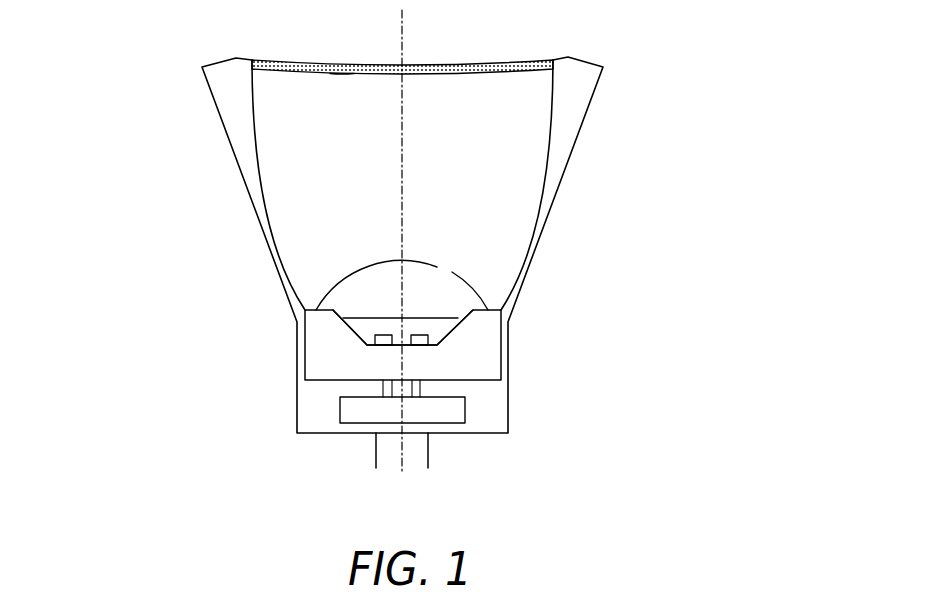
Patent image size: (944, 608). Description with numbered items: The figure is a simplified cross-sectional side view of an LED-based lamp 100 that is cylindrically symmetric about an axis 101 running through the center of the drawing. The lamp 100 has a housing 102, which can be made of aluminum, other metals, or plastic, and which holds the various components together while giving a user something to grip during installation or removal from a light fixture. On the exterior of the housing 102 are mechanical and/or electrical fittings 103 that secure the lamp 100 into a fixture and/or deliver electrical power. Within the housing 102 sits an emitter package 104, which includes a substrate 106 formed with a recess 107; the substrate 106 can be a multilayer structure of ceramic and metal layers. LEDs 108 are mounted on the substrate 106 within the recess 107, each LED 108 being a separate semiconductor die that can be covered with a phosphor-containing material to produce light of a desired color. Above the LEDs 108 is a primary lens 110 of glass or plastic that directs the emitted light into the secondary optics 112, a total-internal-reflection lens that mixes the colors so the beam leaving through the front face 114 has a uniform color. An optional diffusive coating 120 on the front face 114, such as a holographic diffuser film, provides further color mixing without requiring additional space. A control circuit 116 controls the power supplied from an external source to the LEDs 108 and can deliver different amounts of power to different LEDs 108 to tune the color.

The LED-based lamp 100 is at (741, 134).
The axis 101 is at (404, 32).
The housing 102 is at (593, 103).
The mechanical and/or electrical fittings 103 is at (373, 450).
The emitter package 104 is at (351, 303).
The substrate 106 is at (348, 376).
The recess 107 is at (320, 298).
The LEDs 108 is at (386, 334).
The primary lens 110 is at (357, 268).
The secondary optics 112 is at (527, 182).
The front face 114 is at (342, 80).
The control circuit 116 is at (468, 412).
The diffusive coating 120 is at (307, 61).